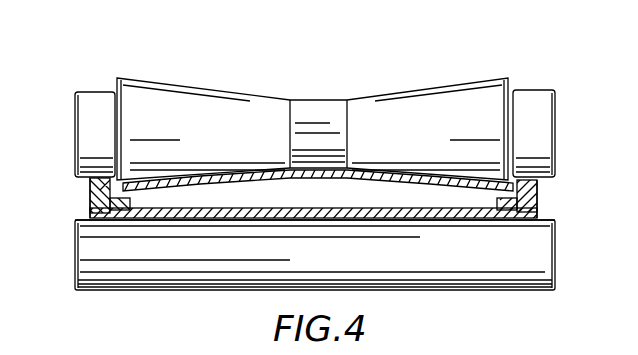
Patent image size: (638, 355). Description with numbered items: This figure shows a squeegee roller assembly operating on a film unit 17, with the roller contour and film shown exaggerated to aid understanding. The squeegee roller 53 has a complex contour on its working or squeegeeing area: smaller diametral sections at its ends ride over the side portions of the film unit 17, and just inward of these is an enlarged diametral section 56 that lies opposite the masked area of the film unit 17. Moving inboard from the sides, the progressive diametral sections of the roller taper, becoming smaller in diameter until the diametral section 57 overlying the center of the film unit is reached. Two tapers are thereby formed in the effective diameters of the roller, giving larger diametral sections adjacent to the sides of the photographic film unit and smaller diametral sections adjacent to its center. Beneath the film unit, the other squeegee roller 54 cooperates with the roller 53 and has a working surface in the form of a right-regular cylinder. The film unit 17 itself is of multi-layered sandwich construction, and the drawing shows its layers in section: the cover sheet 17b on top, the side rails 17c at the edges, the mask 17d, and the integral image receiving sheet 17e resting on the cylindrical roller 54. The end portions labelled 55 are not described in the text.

The film unit 17 is at (80, 201).
The cover sheet 17b is at (540, 186).
The side rails 17c is at (540, 195).
The mask 17d is at (543, 209).
The integral image receiving sheet 17e is at (550, 220).
The squeegee roller 53 is at (410, 90).
The other squeegee roller 54 is at (502, 293).
The end cap 55 is at (93, 100).
The enlarged diametral section 56 is at (118, 78).
The diametral section 57 is at (303, 98).